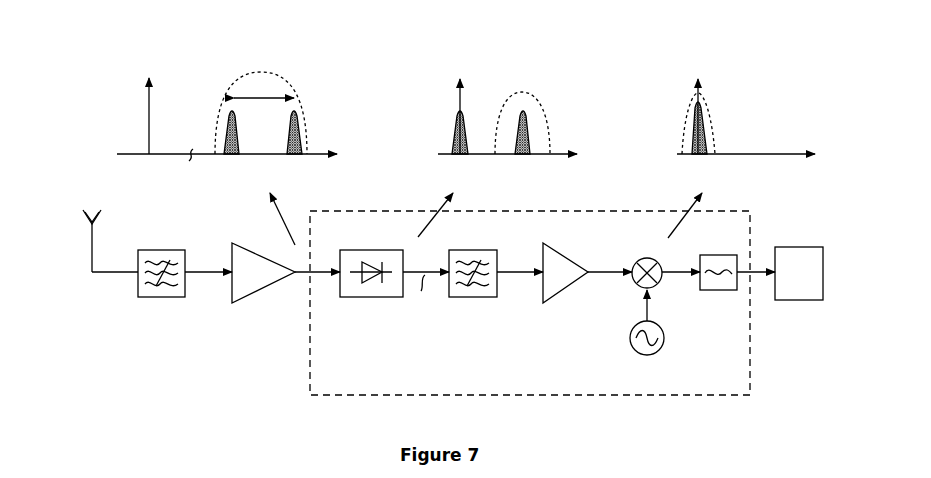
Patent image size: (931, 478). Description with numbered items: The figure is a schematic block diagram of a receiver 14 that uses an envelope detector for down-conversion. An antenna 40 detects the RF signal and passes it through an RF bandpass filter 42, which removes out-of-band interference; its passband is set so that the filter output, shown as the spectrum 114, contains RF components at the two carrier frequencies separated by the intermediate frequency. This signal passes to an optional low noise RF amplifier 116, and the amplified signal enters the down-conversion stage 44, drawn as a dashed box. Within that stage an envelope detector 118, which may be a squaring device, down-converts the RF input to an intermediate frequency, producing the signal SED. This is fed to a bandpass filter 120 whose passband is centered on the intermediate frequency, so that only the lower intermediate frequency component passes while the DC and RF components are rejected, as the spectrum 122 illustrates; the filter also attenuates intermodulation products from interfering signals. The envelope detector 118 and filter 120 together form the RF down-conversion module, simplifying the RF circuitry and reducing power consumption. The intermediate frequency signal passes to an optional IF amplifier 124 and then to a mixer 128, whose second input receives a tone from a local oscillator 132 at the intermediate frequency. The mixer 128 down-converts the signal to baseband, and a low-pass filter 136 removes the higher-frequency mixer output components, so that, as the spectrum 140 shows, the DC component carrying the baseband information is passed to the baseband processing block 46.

The receiver 14 is at (82, 65).
The antenna 40 is at (85, 226).
The RF bandpass filter 42 is at (137, 290).
The down-conversion stage 44 is at (750, 343).
The baseband processing block 46 is at (798, 247).
The output signal of the RF bandpass filter 114 is at (264, 54).
The low noise RF amplifier 116 is at (255, 252).
The envelope detector 118 is at (368, 250).
The bandpass filter 120 is at (475, 250).
The IF bandpass filter output signal 122 is at (528, 66).
The IF amplifier 124 is at (563, 255).
The mixer 128 is at (642, 258).
The local oscillator 132 is at (664, 340).
The low-pass filter 136 is at (713, 255).
The baseband signal 140 is at (741, 67).